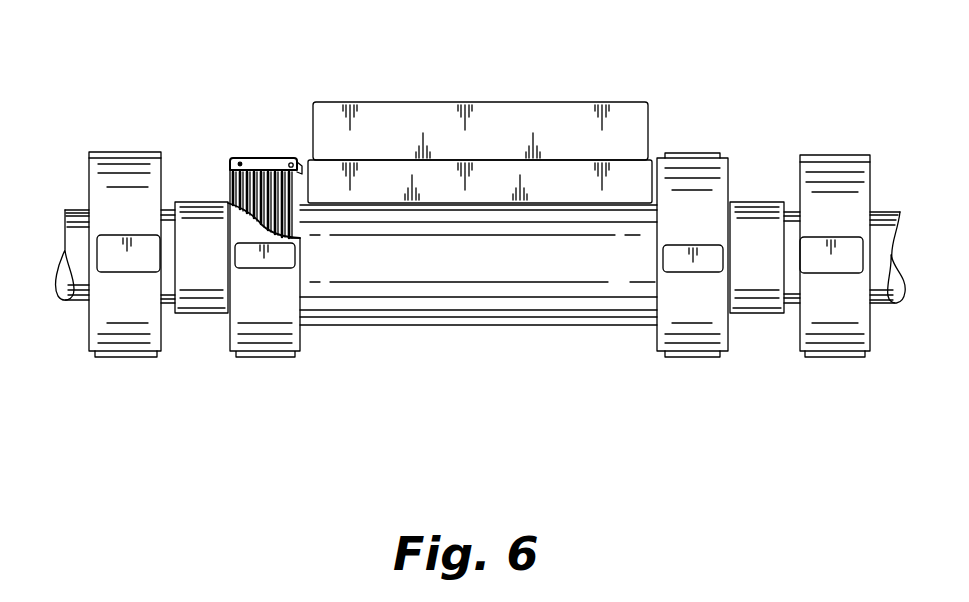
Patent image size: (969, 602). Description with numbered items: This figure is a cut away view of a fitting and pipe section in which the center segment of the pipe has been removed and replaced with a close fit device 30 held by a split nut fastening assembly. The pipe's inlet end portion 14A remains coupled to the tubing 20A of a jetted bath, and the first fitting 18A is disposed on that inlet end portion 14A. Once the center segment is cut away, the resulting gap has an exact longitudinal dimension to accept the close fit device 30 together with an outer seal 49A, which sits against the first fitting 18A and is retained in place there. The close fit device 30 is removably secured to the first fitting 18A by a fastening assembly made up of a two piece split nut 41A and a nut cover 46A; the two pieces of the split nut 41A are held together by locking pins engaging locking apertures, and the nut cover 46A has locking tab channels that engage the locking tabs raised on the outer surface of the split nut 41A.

The tubing 20A is at (65, 212).
The nut cover 46A is at (96, 152).
The inlet end portion 14A is at (202, 202).
The first fitting 18A is at (248, 160).
The two piece split nut 41A is at (275, 163).
The outer seal 49A is at (300, 165).
The close fit device 30 is at (423, 337).